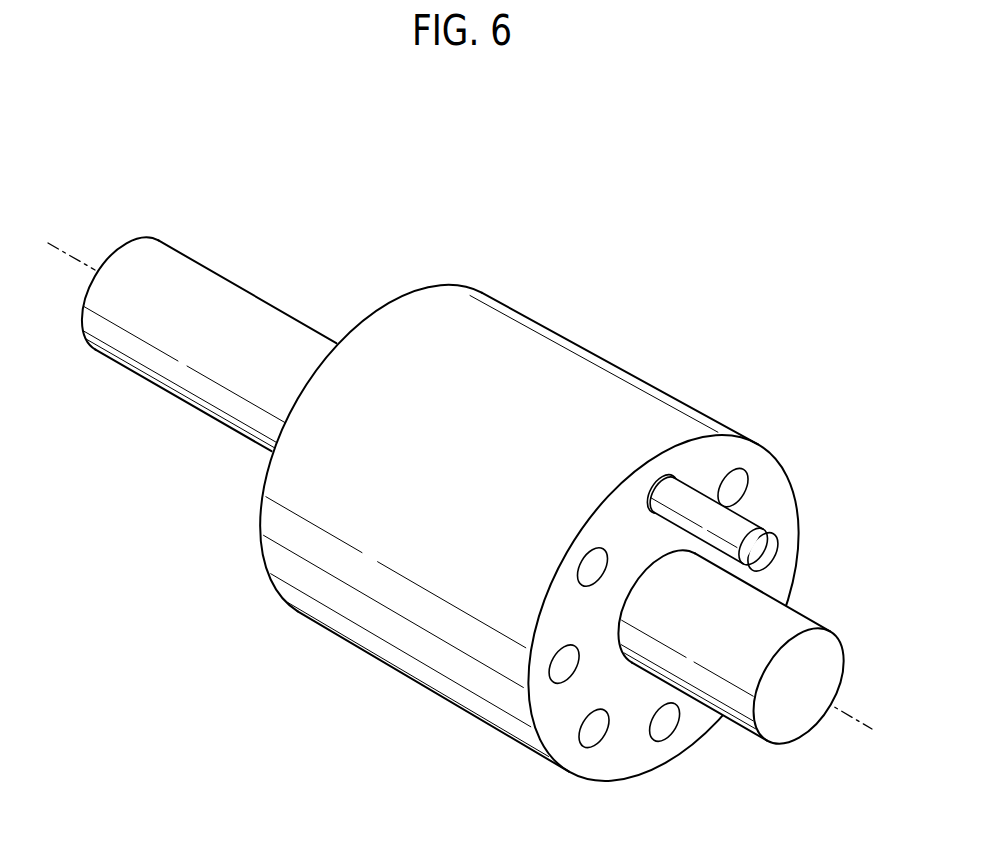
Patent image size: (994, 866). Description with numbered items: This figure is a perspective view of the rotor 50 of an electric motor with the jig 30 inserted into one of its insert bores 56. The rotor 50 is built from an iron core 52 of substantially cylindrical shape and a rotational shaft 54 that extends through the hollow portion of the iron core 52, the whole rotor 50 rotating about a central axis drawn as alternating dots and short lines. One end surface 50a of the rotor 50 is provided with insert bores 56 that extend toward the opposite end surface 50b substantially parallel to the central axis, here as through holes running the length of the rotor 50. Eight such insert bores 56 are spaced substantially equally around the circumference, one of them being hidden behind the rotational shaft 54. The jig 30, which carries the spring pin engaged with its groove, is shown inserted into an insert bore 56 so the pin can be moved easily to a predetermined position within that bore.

The jig 30 is at (680, 506).
The rotor 50 is at (471, 498).
The end surface 50a is at (778, 500).
The opposite end surface 50b is at (377, 286).
The iron core 52 is at (557, 486).
The rotational shaft 54 is at (255, 296).
The insert bore 56 is at (667, 473).